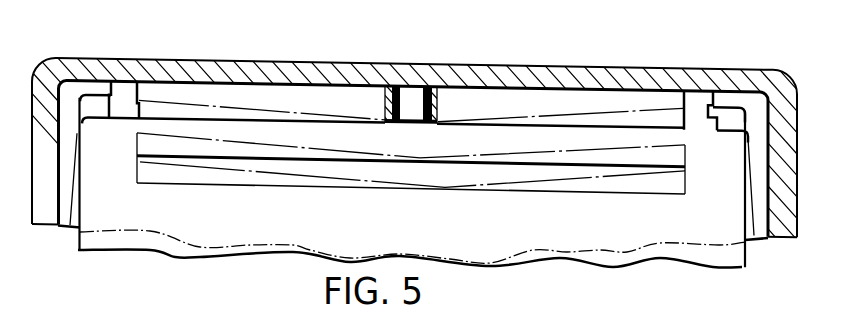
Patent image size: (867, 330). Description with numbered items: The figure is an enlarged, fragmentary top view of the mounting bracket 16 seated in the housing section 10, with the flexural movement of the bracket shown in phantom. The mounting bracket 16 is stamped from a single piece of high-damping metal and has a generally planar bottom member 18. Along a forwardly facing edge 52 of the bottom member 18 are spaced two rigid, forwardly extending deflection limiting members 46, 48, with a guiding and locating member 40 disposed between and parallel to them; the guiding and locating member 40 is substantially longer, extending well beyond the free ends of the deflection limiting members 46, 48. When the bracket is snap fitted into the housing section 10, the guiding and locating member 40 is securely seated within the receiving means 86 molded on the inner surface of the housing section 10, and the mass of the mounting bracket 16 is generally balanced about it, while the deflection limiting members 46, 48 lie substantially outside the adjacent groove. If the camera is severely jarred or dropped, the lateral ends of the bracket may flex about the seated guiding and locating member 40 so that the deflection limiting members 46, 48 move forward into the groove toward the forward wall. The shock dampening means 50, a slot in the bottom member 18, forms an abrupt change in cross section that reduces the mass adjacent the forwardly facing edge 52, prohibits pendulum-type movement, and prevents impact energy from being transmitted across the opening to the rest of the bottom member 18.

The housing section 10 is at (797, 142).
The mounting bracket 16 is at (737, 243).
The bottom member 18 is at (253, 220).
The guiding and locating member 40 is at (412, 95).
The deflection limiting member 46 is at (122, 98).
The deflection limiting member 48 is at (706, 112).
The shock dampening means 50 is at (431, 186).
The forwardly facing edge 52 is at (457, 121).
The receiving means 86 is at (383, 92).